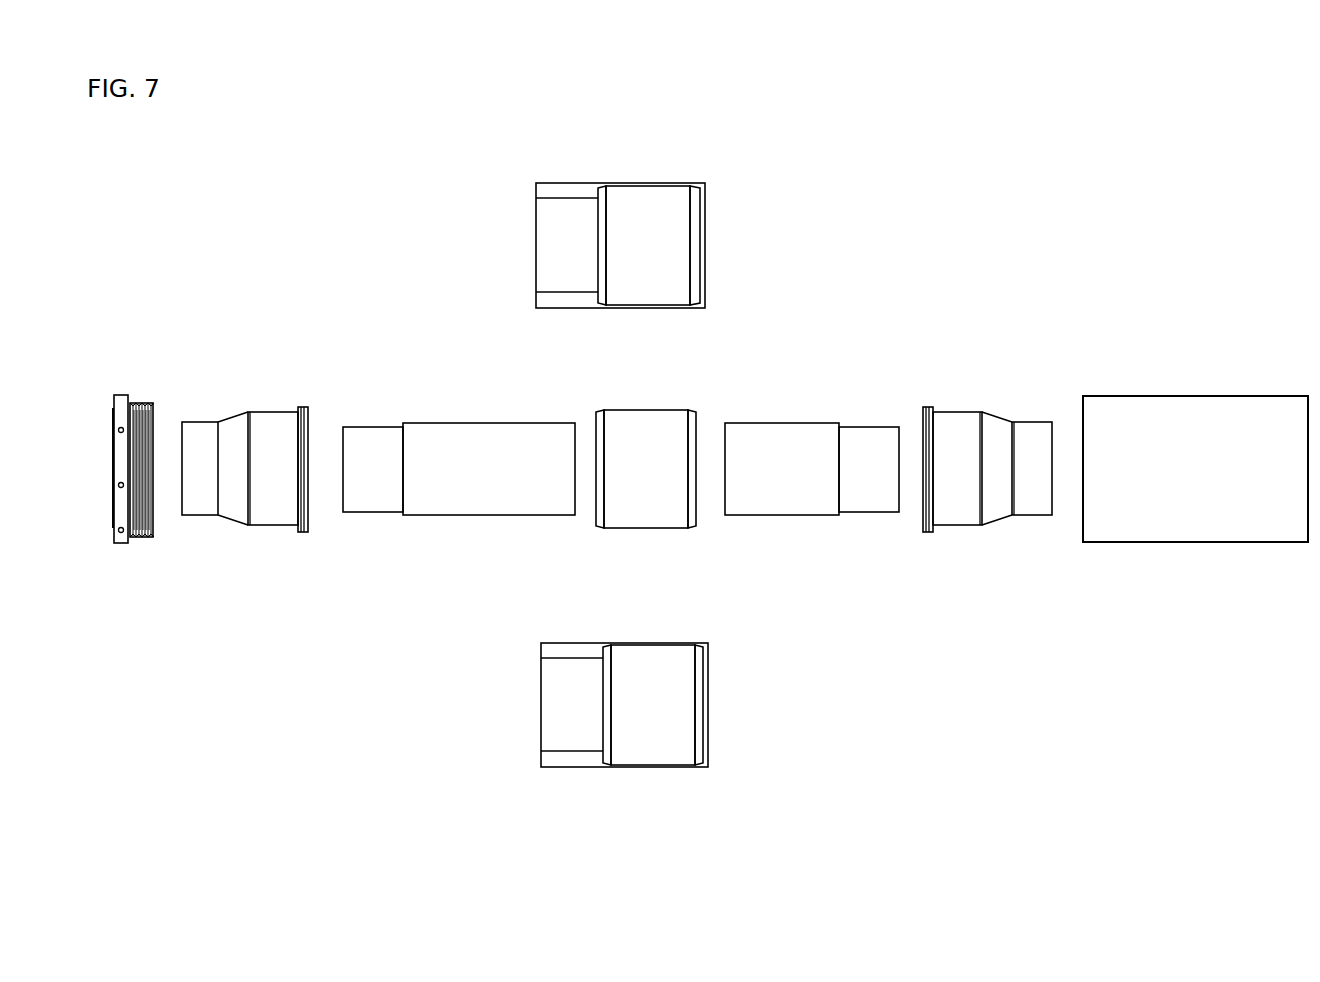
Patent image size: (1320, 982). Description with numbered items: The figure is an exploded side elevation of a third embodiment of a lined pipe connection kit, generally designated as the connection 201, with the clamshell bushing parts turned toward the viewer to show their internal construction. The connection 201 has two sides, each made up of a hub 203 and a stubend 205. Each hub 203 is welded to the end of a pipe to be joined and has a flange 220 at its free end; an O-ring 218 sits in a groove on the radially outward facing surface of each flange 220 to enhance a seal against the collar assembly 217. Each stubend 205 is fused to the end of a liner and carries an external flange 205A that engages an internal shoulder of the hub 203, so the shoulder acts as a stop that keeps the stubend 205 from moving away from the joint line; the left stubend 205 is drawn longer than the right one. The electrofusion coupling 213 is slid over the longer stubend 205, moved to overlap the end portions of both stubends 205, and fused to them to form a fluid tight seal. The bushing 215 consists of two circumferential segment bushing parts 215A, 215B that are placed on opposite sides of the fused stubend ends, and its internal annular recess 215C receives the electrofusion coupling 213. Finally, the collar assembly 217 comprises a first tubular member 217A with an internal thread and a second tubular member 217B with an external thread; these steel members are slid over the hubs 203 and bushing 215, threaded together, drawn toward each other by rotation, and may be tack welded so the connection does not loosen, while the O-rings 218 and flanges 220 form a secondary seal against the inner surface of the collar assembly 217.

The connection 201 is at (1088, 194).
The hub 203 is at (270, 527).
The stubend 205 is at (465, 515).
The external flange 205A is at (393, 423).
The electrofusion coupling 213 is at (665, 408).
The bushing 215 is at (725, 140).
The bushing part 215A is at (652, 183).
The bushing part 215B is at (655, 767).
The internal annular recess 215C is at (665, 187).
The collar assembly 217 is at (1210, 365).
The first tubular member 217A is at (1200, 543).
The second tubular member 217B is at (114, 540).
The O-ring 218 is at (300, 407).
The flange 220 is at (298, 407).